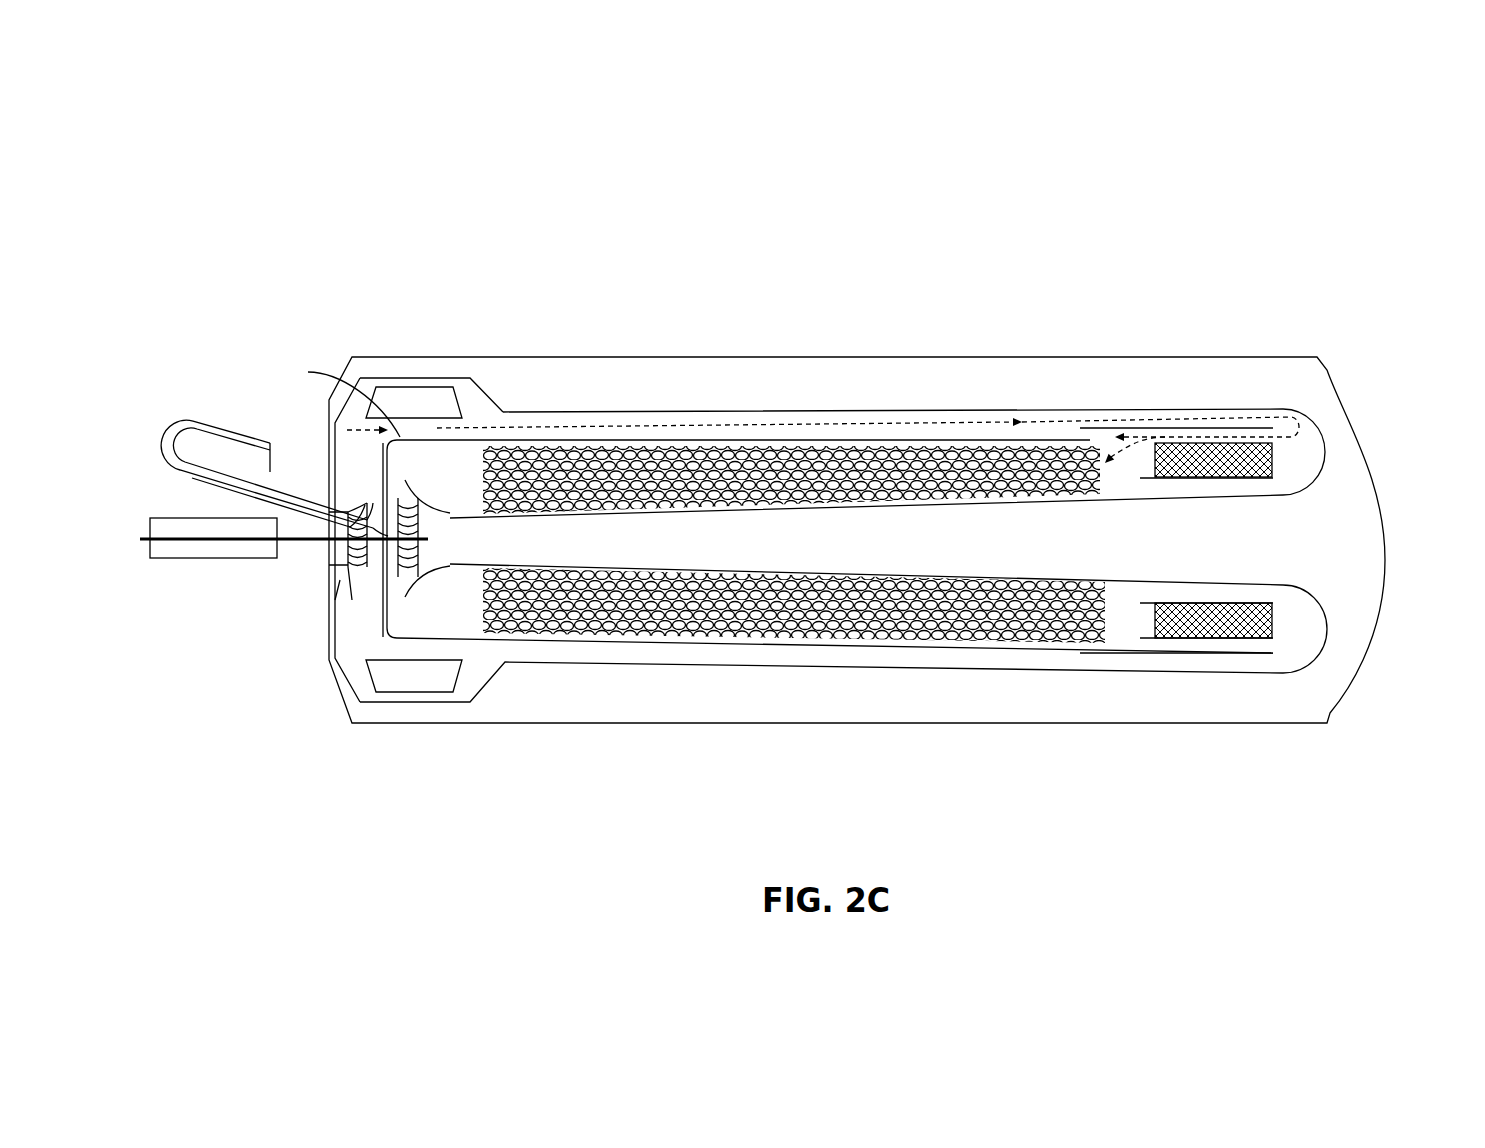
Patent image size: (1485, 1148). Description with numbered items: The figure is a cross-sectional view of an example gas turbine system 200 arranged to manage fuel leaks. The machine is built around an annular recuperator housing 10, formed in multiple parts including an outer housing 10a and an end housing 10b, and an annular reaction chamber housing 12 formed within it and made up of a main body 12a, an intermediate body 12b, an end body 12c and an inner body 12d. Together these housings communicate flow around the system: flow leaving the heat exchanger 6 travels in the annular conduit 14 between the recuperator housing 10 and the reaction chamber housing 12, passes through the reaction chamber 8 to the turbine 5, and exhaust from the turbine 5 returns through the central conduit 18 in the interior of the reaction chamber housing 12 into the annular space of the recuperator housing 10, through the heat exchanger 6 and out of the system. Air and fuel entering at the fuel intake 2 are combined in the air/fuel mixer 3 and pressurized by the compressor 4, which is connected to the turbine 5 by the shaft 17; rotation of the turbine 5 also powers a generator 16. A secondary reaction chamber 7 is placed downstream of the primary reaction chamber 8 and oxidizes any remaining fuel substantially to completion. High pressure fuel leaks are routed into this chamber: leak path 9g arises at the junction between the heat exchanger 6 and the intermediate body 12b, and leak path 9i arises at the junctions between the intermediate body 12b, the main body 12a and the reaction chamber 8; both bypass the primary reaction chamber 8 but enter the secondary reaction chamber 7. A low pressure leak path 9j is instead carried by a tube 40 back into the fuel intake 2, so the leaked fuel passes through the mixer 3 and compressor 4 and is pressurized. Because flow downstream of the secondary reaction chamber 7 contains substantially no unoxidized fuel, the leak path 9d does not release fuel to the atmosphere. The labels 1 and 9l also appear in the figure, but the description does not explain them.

The gas turbine system 200 is at (325, 150).
The recuperator housing 10 is at (942, 355).
The outer housing 10a is at (1062, 357).
The end housing 10b is at (328, 446).
The annular conduit 14 is at (893, 410).
The reaction chamber housing 12 is at (815, 420).
The main body 12a is at (1095, 418).
The intermediate body 12b is at (660, 440).
The end body 12c is at (383, 494).
The inner body 12d is at (452, 518).
The leak path 9d is at (473, 483).
The high pressure leak path 9g is at (567, 425).
The high pressure leak path 9i is at (1210, 428).
The low pressure leak path 9j is at (178, 462).
The junction passage 9l is at (333, 440).
The tube 40 is at (212, 427).
The fuel intake 2 is at (298, 494).
The generator 16 is at (207, 518).
The air/fuel mixer 3 is at (300, 568).
The igniter 1 is at (335, 572).
The compressor 4 is at (360, 568).
The shaft 17 is at (368, 568).
The turbine 5 is at (417, 638).
The heat exchanger 6 is at (410, 682).
The secondary reaction chamber 7 is at (712, 640).
The reaction chamber 8 is at (1222, 640).
The central conduit 18 is at (1243, 537).